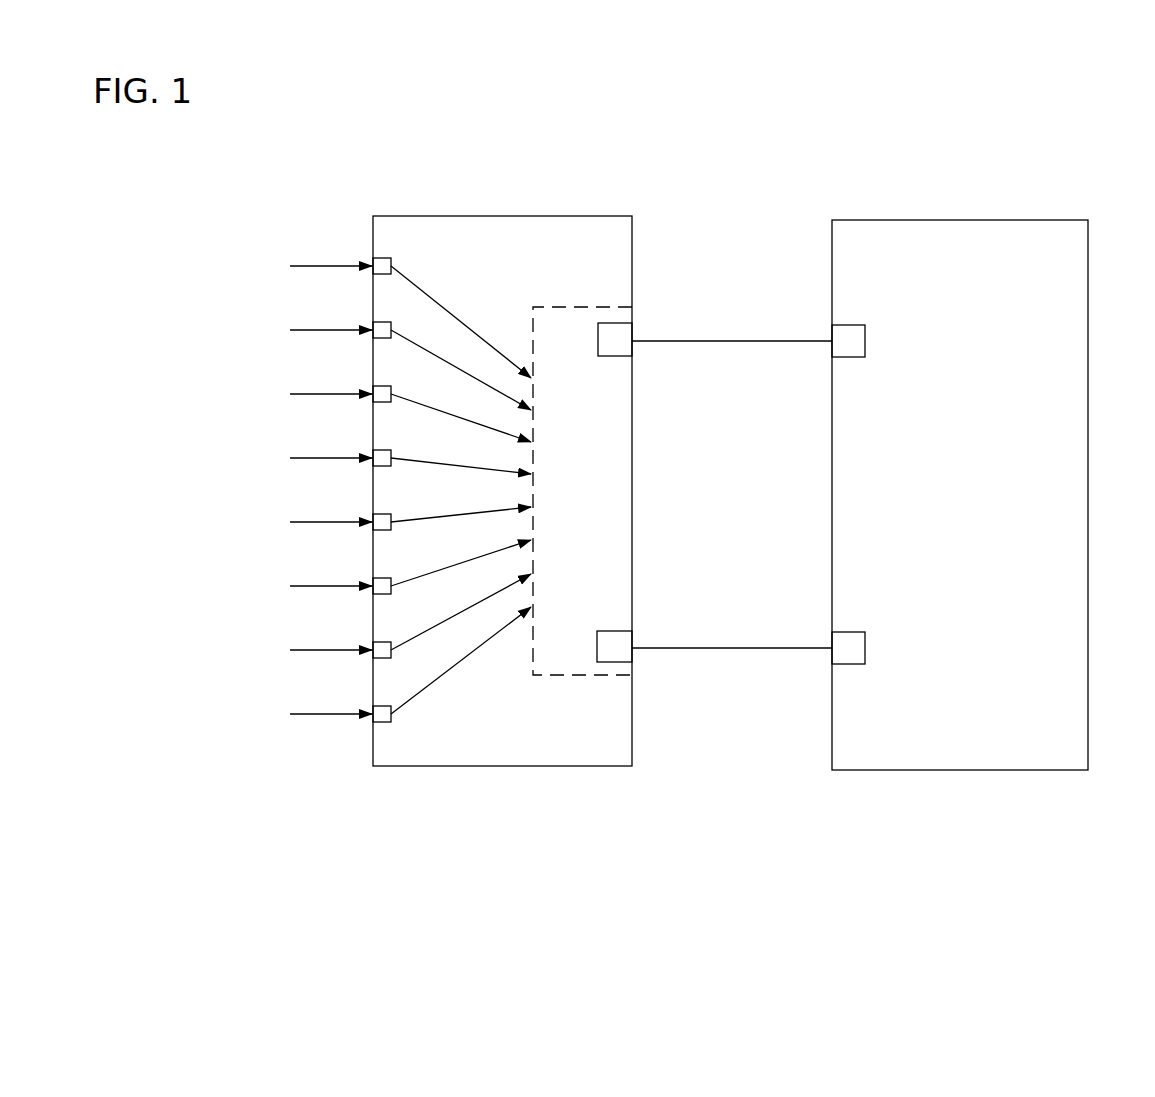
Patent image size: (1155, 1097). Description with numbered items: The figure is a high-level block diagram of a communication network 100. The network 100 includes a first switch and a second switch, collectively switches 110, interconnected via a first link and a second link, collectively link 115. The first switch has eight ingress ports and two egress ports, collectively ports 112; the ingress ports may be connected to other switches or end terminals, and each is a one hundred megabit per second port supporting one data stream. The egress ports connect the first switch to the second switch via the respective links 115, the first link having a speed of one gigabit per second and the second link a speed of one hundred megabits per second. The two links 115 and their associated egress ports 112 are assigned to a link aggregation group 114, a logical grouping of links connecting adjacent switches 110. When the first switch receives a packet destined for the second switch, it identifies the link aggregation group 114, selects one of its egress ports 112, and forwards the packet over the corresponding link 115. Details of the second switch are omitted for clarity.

The communication network 100 is at (159, 46).
The switch 110 is at (512, 767).
The port 112 is at (448, 467).
The link aggregation group 114 is at (570, 307).
The link 115 is at (748, 471).